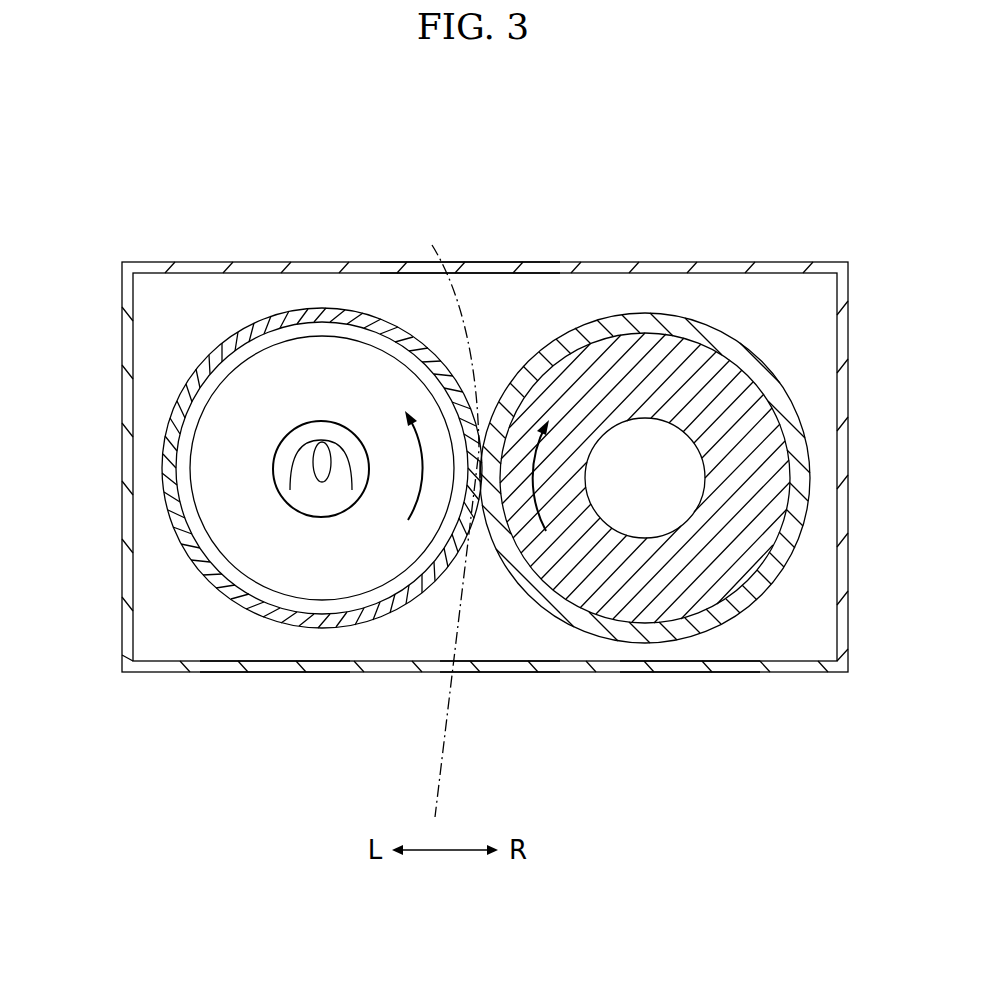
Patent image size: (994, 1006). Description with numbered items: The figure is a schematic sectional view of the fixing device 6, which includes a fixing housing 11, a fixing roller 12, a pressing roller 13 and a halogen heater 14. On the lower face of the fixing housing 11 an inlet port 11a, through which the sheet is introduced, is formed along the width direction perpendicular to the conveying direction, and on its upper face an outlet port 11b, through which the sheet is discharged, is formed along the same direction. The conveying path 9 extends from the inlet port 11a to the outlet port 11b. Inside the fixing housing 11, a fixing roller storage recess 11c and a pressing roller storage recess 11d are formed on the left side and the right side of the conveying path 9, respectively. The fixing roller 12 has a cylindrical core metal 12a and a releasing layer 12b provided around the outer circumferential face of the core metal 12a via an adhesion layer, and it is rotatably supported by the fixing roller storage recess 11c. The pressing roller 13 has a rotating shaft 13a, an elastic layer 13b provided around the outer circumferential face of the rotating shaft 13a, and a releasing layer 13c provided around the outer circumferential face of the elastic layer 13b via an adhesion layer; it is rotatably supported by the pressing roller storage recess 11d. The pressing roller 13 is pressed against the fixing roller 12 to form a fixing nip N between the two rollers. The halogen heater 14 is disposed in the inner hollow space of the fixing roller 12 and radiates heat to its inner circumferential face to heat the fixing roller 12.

The fixing device 6 is at (339, 187).
The conveying path 9 is at (437, 710).
The fixing housing 11 is at (221, 262).
The inlet port 11a is at (493, 668).
The outlet port 11b is at (466, 272).
The fixing roller storage recess 11c is at (273, 650).
The pressing roller storage recess 11d is at (683, 656).
The fixing roller 12 is at (158, 428).
The cylindrical core metal 12a is at (175, 478).
The releasing layer 12b is at (163, 503).
The pressing roller 13 is at (812, 424).
The rotating shaft 13a is at (688, 482).
The elastic layer 13b is at (757, 500).
The releasing layer 13c is at (790, 540).
The halogen heater 14 is at (298, 416).
The fixing nip N is at (485, 525).